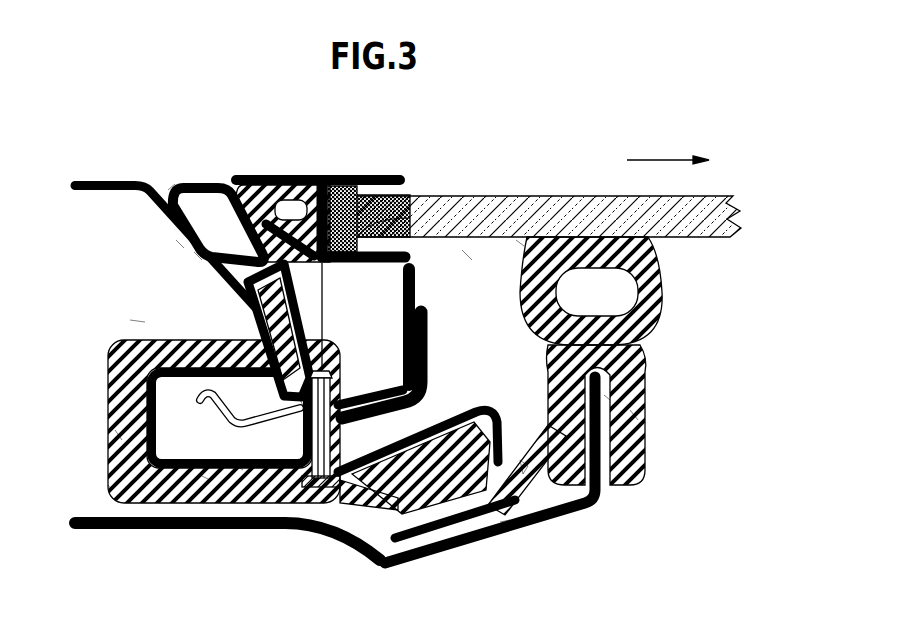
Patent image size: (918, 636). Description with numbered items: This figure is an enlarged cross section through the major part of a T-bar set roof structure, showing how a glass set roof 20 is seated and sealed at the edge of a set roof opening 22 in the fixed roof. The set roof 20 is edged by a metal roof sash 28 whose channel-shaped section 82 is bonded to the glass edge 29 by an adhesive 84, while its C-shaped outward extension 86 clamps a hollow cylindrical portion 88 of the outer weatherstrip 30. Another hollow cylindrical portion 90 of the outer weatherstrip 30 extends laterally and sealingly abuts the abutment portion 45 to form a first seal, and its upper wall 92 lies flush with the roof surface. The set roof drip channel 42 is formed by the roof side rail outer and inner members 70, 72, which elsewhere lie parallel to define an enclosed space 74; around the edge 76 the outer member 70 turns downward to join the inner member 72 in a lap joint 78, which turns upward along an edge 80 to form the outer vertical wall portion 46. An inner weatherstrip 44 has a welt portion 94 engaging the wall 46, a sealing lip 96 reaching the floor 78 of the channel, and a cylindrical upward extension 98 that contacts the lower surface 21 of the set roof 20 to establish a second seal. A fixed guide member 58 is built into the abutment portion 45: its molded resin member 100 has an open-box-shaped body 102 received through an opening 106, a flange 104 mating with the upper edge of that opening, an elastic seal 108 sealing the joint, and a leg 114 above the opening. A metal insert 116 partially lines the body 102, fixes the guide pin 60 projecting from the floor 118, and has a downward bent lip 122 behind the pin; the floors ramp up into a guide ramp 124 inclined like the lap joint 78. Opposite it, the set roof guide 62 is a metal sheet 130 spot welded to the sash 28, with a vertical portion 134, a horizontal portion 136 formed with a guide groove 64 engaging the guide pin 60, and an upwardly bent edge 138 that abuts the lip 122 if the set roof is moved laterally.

The set roof 20 is at (531, 200).
The lower surface of the set roof 21 is at (520, 243).
The set roof opening 22 is at (162, 180).
The roof sash 28 is at (384, 175).
The edge of the set roof 29 is at (410, 258).
The outer weatherstrip 30 is at (230, 180).
The set roof drip channel 42 is at (467, 257).
The inner weatherstrip 44 is at (652, 352).
The abutment portion 45 is at (180, 243).
The outer vertical wall portion 46 is at (637, 416).
The fixed guide member 58 is at (100, 387).
The guide pin 60 is at (333, 447).
The set roof guide 62 is at (442, 356).
The guide groove 64 is at (362, 408).
The roof side rail outer member 70 is at (115, 181).
The roof side rail inner member 72 is at (153, 530).
The enclosed space 74 is at (140, 322).
The edge of the set roof opening 76 is at (147, 197).
The lap joint 78 is at (507, 520).
The upturned edge 80 is at (603, 497).
The channel-shaped section 82 is at (361, 187).
The adhesive 84 is at (408, 192).
The C-shaped outward extension 86 is at (291, 186).
The hollow cylindrical portion 88 is at (322, 278).
The hollow cylindrical portion 90 is at (200, 250).
The upper wall 92 is at (191, 183).
The welt portion 94 is at (637, 457).
The sealing lip 96 is at (523, 457).
The cylindrical upward extension 98 is at (660, 303).
The molded resin member 100 is at (100, 477).
The open-box-shaped body 102 is at (120, 437).
The flange 104 is at (257, 312).
The opening 106 is at (290, 390).
The elastic seal 108 is at (283, 305).
The leg of the flange 114 is at (303, 330).
The metal insert 116 is at (203, 470).
The floor of the body 118 is at (237, 470).
The bent edge or lip 122 is at (297, 400).
The guide ramp 124 is at (450, 420).
The metal sheet 130 is at (425, 280).
The vertical portion 134 is at (412, 303).
The horizontal portion 136 is at (250, 430).
The upwardly bent edge 138 is at (203, 410).